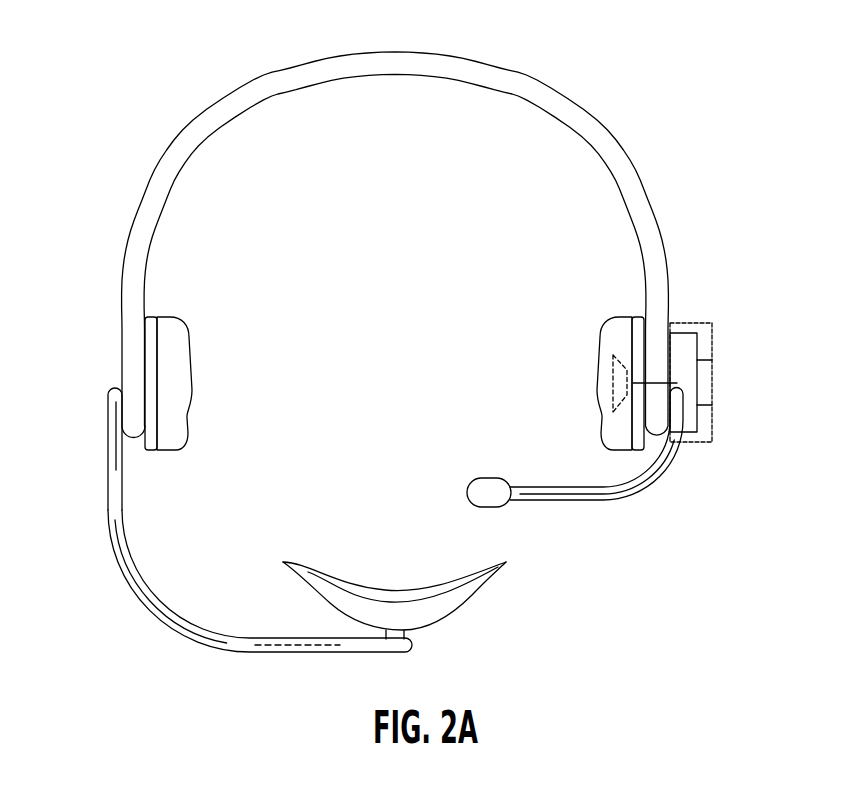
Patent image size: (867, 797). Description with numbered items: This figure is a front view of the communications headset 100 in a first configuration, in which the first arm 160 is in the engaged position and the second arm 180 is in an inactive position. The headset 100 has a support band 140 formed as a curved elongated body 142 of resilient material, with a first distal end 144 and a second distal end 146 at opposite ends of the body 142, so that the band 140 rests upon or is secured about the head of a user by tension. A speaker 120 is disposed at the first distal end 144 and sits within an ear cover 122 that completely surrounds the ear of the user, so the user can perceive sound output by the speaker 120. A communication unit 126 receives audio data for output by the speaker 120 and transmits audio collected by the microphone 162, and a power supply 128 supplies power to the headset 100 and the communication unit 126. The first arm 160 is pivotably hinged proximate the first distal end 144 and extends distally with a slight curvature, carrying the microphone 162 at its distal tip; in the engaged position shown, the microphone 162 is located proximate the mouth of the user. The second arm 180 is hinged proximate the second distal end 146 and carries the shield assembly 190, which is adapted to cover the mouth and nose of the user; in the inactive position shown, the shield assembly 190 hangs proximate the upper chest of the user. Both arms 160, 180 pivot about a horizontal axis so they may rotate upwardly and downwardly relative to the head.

The communications headset 100 is at (407, 31).
The support band 140 is at (197, 117).
The curved elongated body 142 is at (590, 138).
The second distal end 146 is at (133, 337).
The speaker 120 is at (627, 372).
The ear cover 122 is at (622, 325).
The first distal end 144 is at (660, 370).
The power supply 128 is at (705, 373).
The communication unit 126 is at (690, 418).
The first arm 160 is at (677, 477).
The microphone 162 is at (495, 500).
The second arm 180 is at (112, 508).
The shield assembly 190 is at (422, 612).